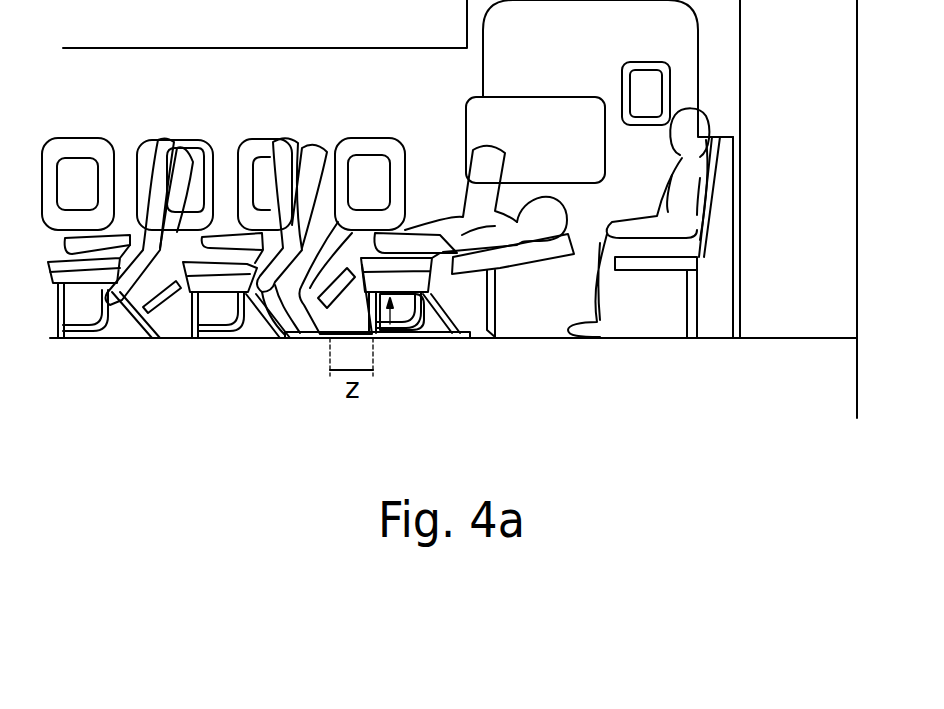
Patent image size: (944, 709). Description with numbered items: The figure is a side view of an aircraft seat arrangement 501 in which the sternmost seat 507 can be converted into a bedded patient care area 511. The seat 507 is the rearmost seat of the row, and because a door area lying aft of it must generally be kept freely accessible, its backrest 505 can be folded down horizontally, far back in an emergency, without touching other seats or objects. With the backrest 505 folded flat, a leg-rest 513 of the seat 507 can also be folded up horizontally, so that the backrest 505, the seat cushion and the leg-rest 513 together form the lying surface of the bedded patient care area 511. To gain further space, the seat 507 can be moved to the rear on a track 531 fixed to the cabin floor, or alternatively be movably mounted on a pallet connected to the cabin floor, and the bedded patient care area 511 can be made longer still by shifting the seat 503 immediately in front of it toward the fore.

The seat arrangement 501 is at (242, 380).
The seat 503 is at (223, 268).
The backrest 505 is at (590, 330).
The sternmost seat 507 is at (398, 340).
The bedded patient care area 511 is at (458, 270).
The leg-rest 513 is at (322, 330).
The track 531 is at (457, 338).